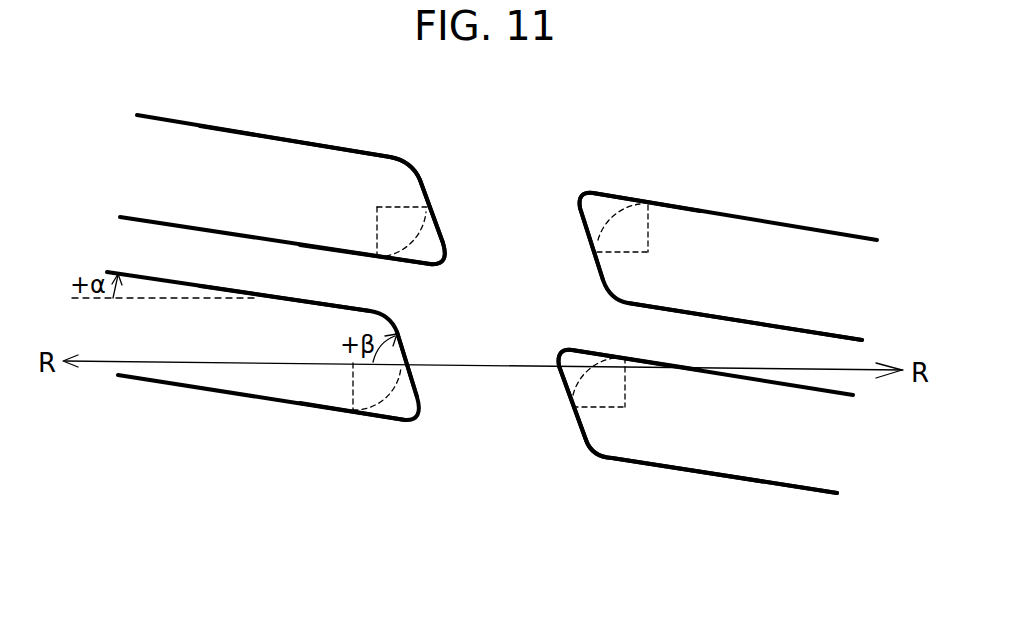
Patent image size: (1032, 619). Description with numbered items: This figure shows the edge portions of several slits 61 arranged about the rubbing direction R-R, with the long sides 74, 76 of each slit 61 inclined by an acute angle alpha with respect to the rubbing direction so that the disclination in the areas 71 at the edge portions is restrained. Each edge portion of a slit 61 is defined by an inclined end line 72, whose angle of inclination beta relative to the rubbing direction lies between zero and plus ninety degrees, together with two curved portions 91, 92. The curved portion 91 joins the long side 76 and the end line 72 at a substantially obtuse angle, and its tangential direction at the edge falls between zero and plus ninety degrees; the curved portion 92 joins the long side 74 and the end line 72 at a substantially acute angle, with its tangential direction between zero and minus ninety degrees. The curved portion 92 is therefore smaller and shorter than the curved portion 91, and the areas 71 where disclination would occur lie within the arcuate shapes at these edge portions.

The slit 61 is at (203, 155).
The area (D) 71 is at (395, 235).
The inclined end line 72 is at (447, 245).
The long side 74 is at (421, 267).
The long side 76 is at (343, 147).
The curved portion 91 is at (417, 162).
The curved portion 92 is at (447, 270).